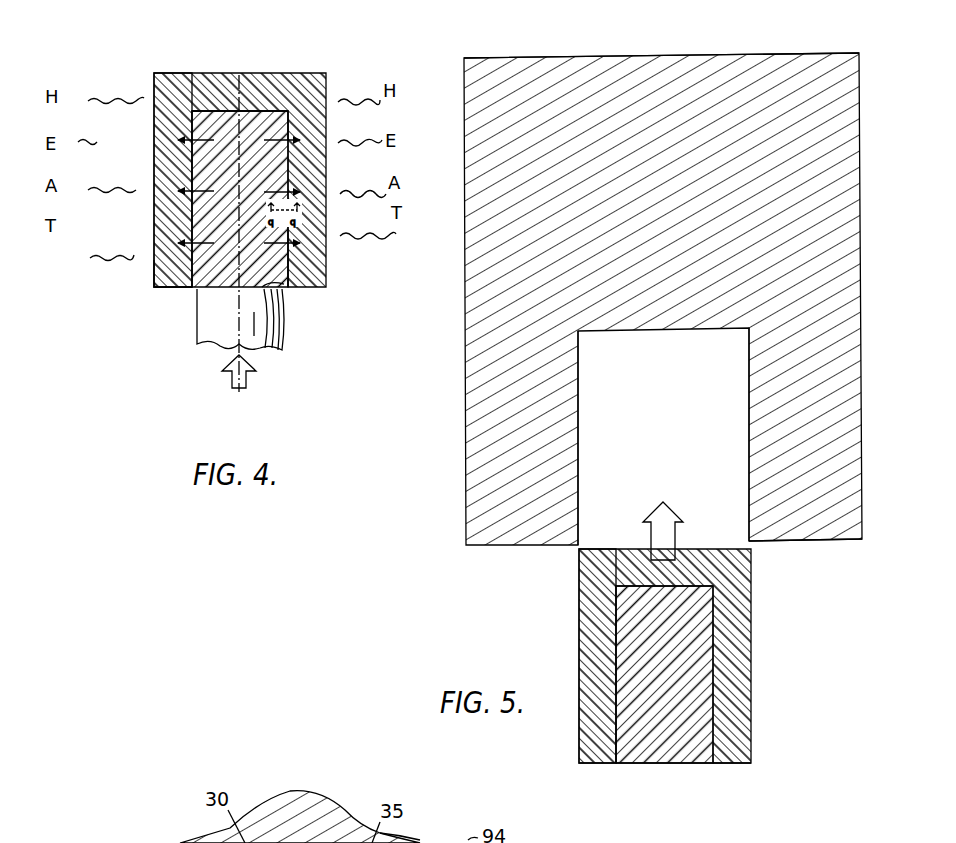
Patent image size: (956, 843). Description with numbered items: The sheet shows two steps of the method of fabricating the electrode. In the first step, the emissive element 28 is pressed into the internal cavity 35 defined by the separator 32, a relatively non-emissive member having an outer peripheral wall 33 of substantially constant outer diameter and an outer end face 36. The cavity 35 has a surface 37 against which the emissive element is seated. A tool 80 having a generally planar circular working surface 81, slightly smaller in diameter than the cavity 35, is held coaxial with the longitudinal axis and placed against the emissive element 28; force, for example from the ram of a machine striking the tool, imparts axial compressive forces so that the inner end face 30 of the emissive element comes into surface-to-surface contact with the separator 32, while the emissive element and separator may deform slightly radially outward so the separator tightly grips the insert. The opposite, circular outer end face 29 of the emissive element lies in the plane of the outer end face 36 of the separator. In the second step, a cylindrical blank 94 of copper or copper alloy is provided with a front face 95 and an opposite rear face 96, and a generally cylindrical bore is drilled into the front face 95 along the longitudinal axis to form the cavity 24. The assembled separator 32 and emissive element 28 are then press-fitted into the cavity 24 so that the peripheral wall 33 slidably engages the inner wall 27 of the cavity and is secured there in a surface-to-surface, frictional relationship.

In FIG. 5, the cavity 24 is at (745, 515).
In FIG. 5, the inner wall 27 is at (578, 456).
In FIG. 4, the emissive element 28 is at (208, 262).
In FIG. 5, the emissive element 28 is at (690, 714).
In FIG. 5, the outer end face 29 is at (648, 765).
In FIG. 4, the inner end face 30 is at (256, 112).
In FIG. 4, the separator 32 is at (154, 212).
In FIG. 5, the separator 32 is at (725, 622).
In FIG. 4, the outer peripheral wall 33 is at (154, 141).
In FIG. 5, the outer peripheral wall 33 is at (579, 604).
In FIG. 4, the internal cavity 35 is at (326, 259).
In FIG. 4, the outer end face 36 is at (158, 290).
In FIG. 5, the outer end face 36 is at (723, 765).
In FIG. 4, the surface 37 is at (284, 116).
In FIG. 4, the tool 80 is at (258, 340).
In FIG. 4, the working surface 81 is at (285, 285).
In FIG. 5, the cylindrical blank 94 is at (840, 458).
In FIG. 5, the front face 95 is at (815, 540).
In FIG. 5, the rear face 96 is at (718, 54).